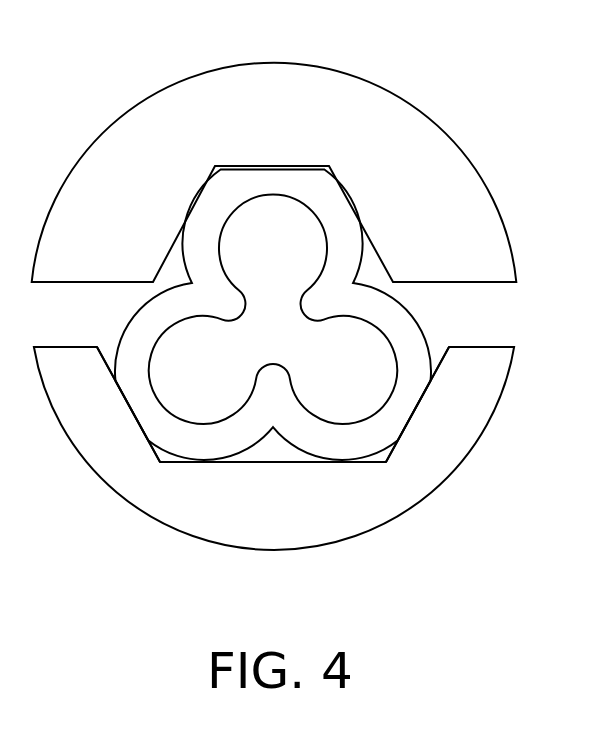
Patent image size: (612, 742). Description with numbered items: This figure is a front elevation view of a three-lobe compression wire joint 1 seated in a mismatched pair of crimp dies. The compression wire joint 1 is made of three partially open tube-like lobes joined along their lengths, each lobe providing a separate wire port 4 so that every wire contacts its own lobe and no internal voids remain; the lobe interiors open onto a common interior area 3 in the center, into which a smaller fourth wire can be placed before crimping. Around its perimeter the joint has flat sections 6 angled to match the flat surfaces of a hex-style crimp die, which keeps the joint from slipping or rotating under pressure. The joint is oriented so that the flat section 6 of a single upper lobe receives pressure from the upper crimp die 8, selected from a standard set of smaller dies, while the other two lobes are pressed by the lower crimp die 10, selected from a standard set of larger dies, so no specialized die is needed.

The compression wire joint 1 is at (338, 215).
The common interior area 3 is at (259, 332).
The wire ports 4 is at (297, 230).
The flat sections 6 is at (283, 163).
The upper crimp die 8 is at (468, 224).
The lower crimp die 10 is at (470, 387).